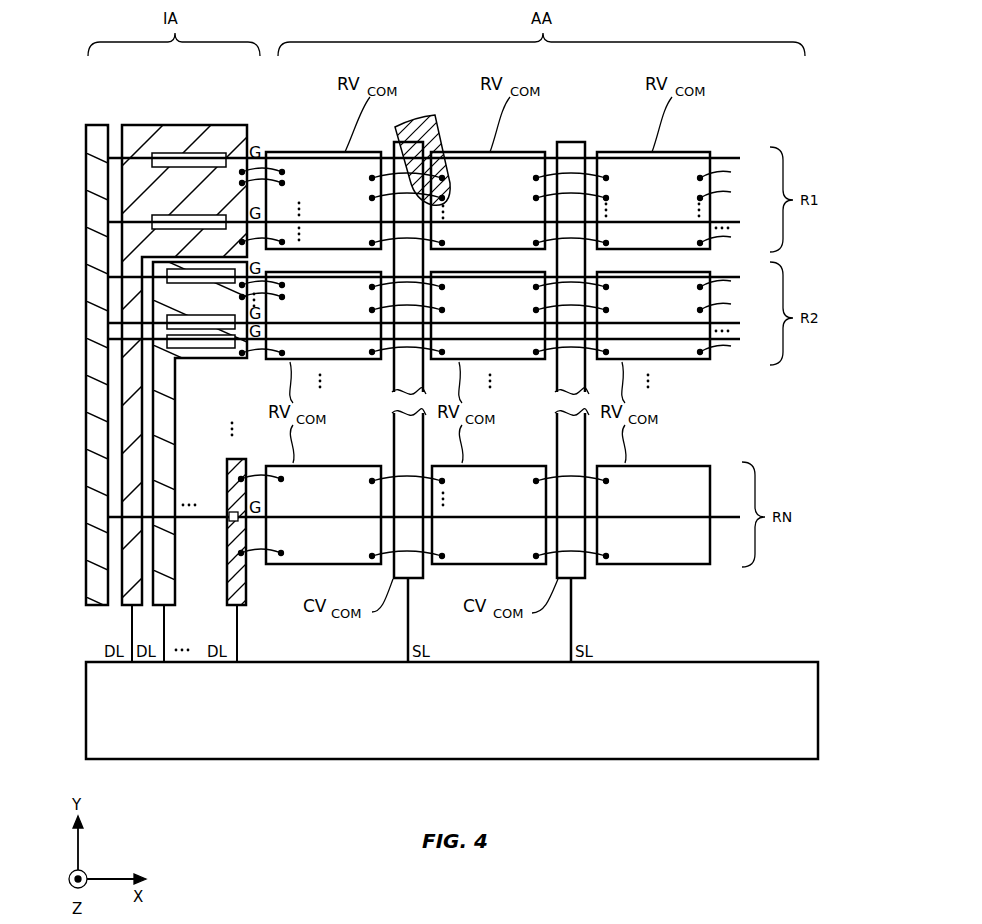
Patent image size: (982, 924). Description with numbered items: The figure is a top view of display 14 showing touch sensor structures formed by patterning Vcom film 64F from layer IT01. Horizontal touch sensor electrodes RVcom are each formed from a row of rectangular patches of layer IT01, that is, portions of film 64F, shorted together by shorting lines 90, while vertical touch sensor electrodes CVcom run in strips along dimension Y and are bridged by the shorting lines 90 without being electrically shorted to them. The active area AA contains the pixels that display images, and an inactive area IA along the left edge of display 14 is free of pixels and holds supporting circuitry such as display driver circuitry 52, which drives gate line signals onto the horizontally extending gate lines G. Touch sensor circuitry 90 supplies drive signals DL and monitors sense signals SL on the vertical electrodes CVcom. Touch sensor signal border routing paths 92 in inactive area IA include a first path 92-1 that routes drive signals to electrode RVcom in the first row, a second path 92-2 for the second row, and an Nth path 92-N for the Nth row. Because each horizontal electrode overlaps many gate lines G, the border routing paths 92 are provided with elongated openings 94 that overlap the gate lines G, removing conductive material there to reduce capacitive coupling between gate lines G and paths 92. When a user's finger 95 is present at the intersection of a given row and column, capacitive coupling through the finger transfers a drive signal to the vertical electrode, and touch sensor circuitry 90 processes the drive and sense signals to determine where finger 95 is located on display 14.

The display 14 is at (760, 120).
The display driver circuitry 52 is at (98, 140).
The touch sensor circuitry 90 is at (278, 183).
The touch sensor signal border routing paths 92 is at (262, 97).
The first path 92-1 is at (209, 150).
The second path 92-2 is at (195, 303).
The Nth path 92-N is at (227, 601).
The openings 94 is at (174, 152).
The finger 95 is at (437, 115).
The Vcom film 64F is at (584, 580).
The layer ITO1 IT01 is at (600, 148).